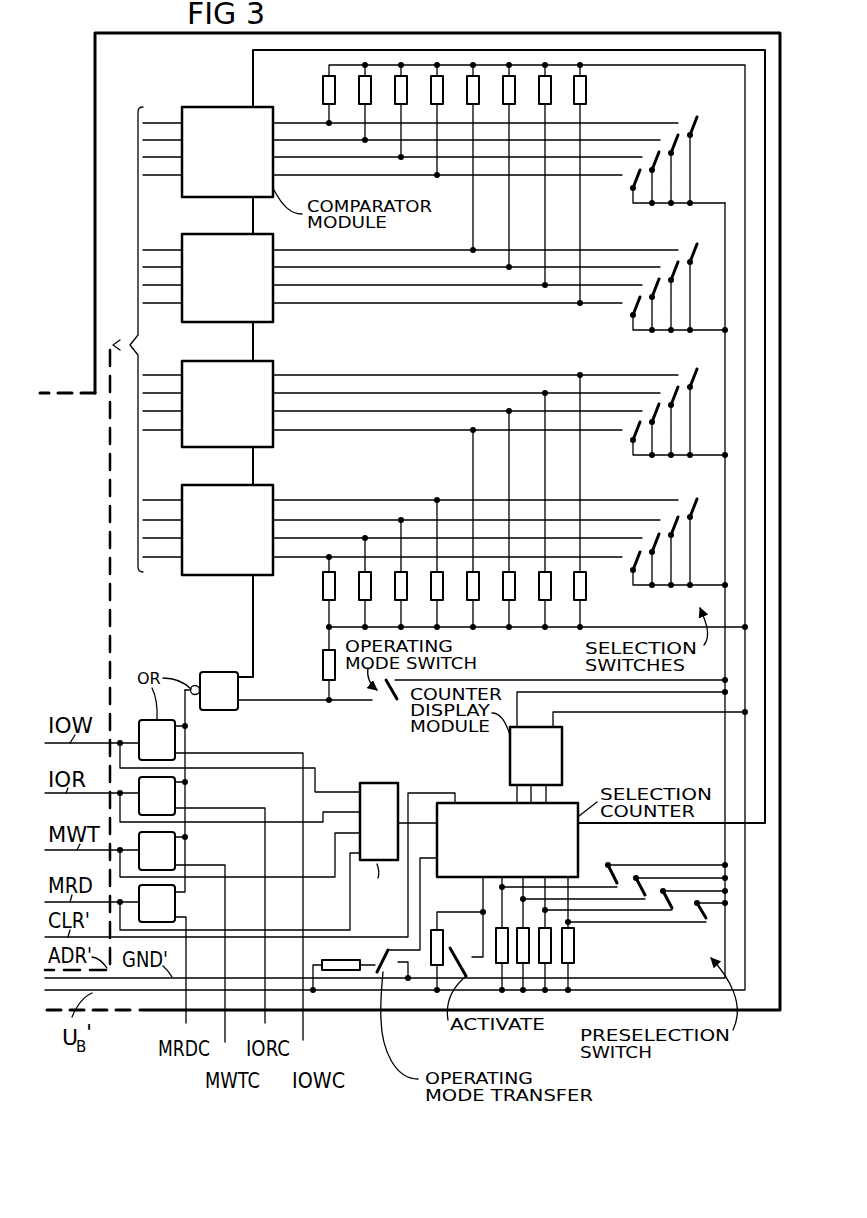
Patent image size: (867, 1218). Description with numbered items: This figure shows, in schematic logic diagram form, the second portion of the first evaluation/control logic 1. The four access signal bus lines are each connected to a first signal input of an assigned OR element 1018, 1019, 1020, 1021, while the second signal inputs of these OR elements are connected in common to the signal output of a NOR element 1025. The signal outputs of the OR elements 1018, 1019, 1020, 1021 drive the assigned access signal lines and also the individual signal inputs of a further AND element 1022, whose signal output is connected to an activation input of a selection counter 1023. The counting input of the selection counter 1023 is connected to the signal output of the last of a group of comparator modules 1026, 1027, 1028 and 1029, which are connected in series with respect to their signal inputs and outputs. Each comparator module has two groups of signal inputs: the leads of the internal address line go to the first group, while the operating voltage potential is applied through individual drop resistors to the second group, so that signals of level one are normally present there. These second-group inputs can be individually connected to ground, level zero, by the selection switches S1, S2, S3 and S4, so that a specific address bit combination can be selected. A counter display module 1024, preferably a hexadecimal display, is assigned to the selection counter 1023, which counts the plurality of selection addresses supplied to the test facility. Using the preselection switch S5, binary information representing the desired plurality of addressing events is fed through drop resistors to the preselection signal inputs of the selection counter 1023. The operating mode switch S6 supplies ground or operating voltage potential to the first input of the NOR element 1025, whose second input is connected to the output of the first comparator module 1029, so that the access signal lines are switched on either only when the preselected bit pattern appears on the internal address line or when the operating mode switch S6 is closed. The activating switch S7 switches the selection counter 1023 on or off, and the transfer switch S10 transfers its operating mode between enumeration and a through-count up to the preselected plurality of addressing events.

The first evaluation/control logic 1 is at (62, 392).
The OR element 1018 is at (176, 741).
The OR element 1019 is at (176, 798).
The OR element 1020 is at (176, 855).
The OR element 1021 is at (176, 906).
The AND element 1022 is at (382, 791).
The selection counter 1023 is at (479, 792).
The counter display module 1024 is at (562, 757).
The NOR element 1025 is at (219, 674).
The comparator module 1026 is at (210, 117).
The comparator module 1027 is at (212, 244).
The comparator module 1028 is at (218, 370).
The comparator module 1029 is at (222, 493).
The selection switch S1 is at (713, 112).
The selection switch S2 is at (713, 248).
The selection switch S3 is at (713, 373).
The selection switch S4 is at (713, 498).
The preselection switch S5 is at (717, 928).
The operating mode switch S6 is at (481, 706).
The activating switch S7 is at (457, 933).
The transfer switch S10 is at (367, 1000).